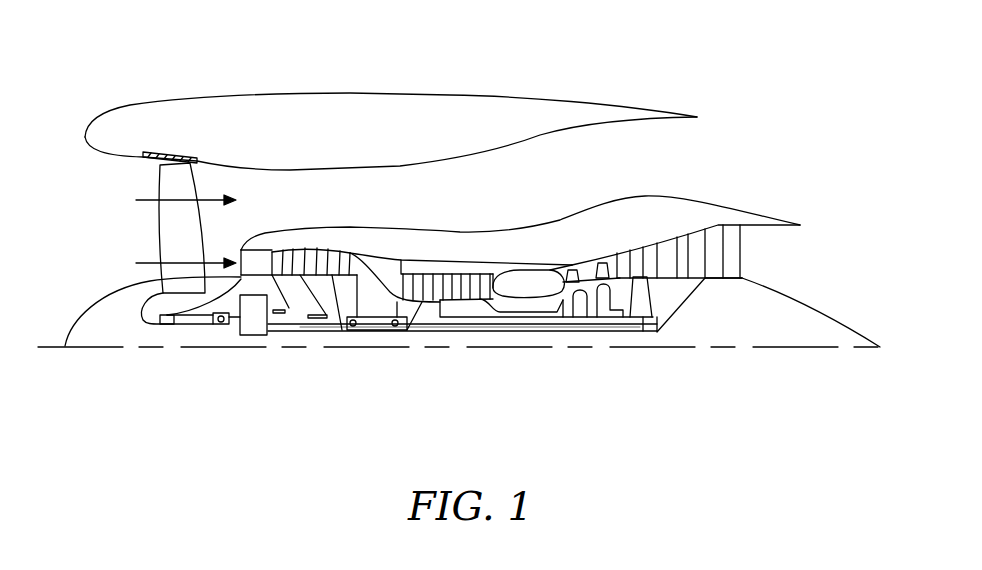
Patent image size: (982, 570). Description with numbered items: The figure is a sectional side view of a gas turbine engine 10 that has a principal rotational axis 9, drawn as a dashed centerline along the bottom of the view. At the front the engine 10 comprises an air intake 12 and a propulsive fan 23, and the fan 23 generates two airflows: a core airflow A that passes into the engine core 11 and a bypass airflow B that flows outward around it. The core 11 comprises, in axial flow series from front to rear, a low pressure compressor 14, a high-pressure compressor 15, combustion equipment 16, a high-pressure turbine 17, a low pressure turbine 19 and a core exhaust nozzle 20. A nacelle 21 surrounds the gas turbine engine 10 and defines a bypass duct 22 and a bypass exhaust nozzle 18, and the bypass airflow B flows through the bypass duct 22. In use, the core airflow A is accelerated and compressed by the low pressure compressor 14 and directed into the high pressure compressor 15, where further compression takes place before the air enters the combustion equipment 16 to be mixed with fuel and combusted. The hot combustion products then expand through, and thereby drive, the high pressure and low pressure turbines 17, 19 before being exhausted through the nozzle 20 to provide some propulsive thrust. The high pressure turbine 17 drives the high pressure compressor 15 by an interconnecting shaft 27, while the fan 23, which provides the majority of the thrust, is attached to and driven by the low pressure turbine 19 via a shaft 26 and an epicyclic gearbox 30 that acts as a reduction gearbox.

The principal rotational axis 9 is at (693, 349).
The gas turbine engine 10 is at (159, 109).
The core 11 is at (497, 250).
The air intake 12 is at (114, 182).
The low pressure compressor 14 is at (320, 254).
The high-pressure compressor 15 is at (457, 283).
The combustion equipment 16 is at (527, 287).
The high-pressure turbine 17 is at (586, 270).
The bypass exhaust nozzle 18 is at (688, 153).
The low pressure turbine 19 is at (713, 240).
The core exhaust nozzle 20 is at (772, 252).
The nacelle 21 is at (374, 103).
The bypass duct 22 is at (643, 167).
The propulsive fan 23 is at (163, 231).
The shaft 26 is at (448, 333).
The interconnecting shaft 27 is at (489, 324).
The epicyclic gearbox 30 is at (253, 328).
The core airflow A is at (175, 264).
The bypass airflow B is at (176, 201).